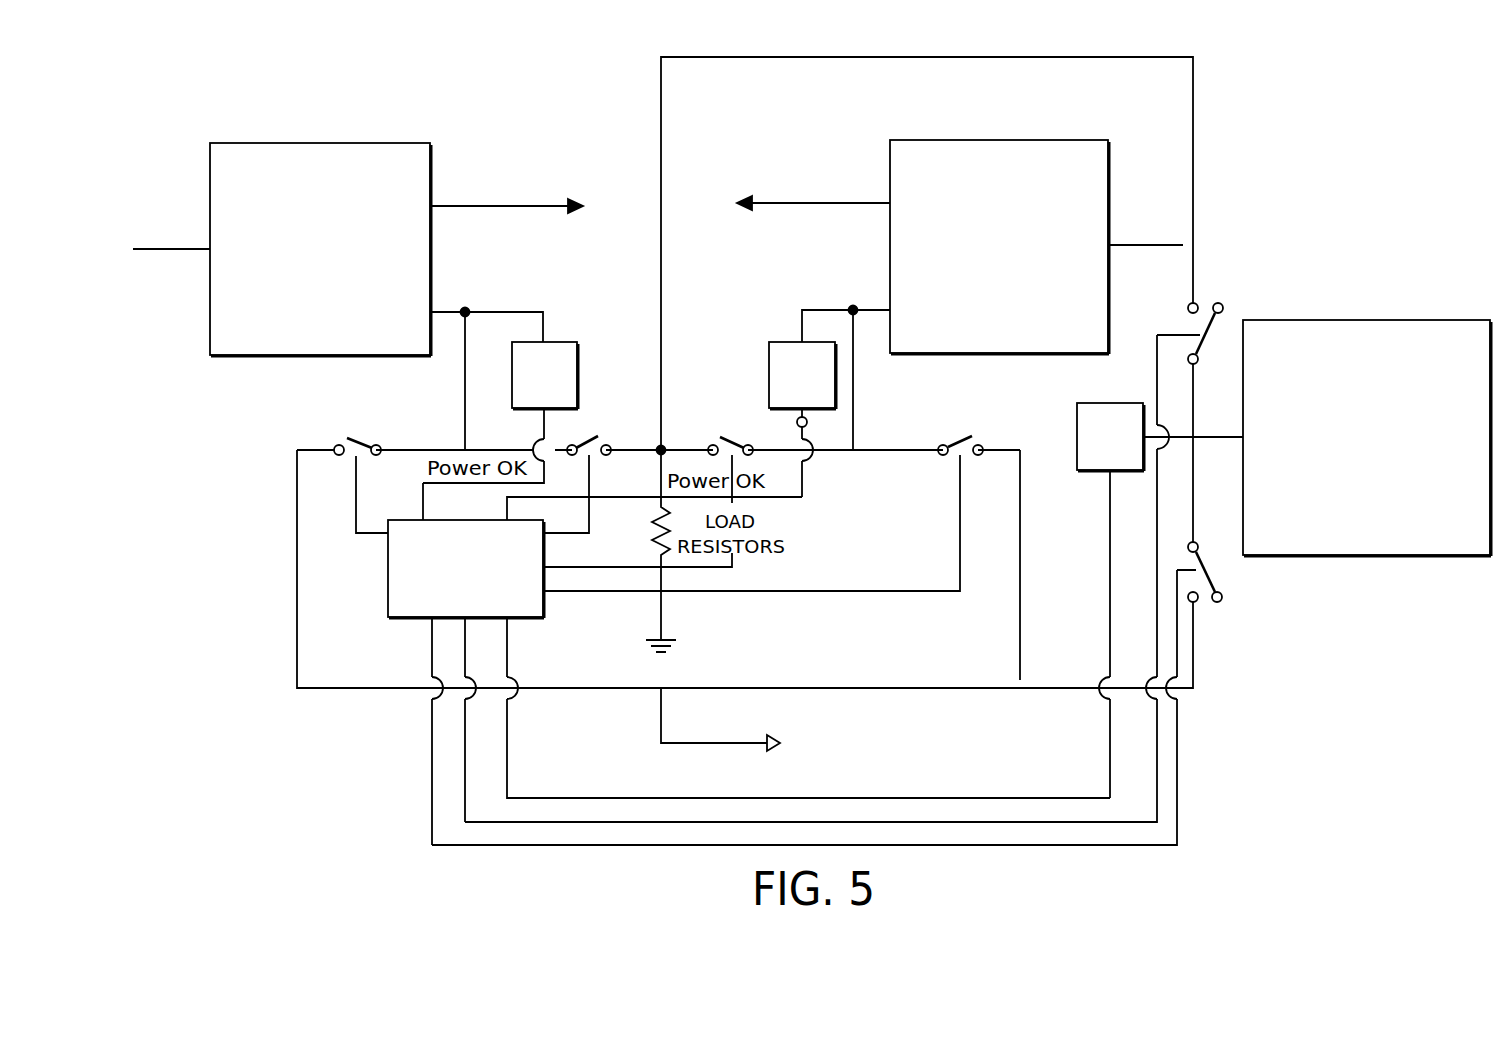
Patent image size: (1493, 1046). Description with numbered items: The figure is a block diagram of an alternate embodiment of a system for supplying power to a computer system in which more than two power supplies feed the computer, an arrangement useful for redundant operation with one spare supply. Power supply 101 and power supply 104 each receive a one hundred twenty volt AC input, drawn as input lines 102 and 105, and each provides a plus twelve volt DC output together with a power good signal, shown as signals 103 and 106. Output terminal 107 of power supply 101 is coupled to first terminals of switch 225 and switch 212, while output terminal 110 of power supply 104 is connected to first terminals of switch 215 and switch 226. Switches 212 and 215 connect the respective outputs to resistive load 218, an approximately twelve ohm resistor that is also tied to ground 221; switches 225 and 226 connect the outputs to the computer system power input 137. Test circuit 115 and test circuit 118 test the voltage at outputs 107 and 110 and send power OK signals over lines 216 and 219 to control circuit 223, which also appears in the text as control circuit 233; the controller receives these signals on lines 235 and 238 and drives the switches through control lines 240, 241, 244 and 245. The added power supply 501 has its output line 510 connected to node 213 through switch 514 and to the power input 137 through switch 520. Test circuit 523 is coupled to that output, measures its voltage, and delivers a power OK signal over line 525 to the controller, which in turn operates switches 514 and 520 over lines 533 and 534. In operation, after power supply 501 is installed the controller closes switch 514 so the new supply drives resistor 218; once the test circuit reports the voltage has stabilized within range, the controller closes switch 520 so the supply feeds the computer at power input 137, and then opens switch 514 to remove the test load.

The power supply 101 is at (314, 143).
The 120VAC input 102 is at (175, 251).
The power good signal 103 is at (500, 208).
The power supply 104 is at (1002, 140).
The 120VAC input 105 is at (1142, 248).
The power good signal 106 is at (830, 210).
The output terminal 107 is at (465, 308).
The output terminal 110 is at (853, 306).
The test circuit 115 is at (580, 363).
The test circuit 118 is at (769, 363).
The computer system power input 137 is at (698, 747).
The switch 212 is at (597, 433).
The node 213 is at (709, 447).
The switch 215 is at (728, 437).
The power OK line 216 is at (544, 422).
The resistive load 218 is at (650, 545).
The power OK line 219 is at (797, 422).
The ground 221 is at (668, 633).
The control circuit 223 is at (483, 588).
The switch 225 is at (352, 457).
The switch 226 is at (968, 457).
The control circuit 233 is at (373, 542).
The power OK input line 235 is at (427, 505).
The power OK input line 238 is at (525, 510).
The switch control line 240 is at (552, 540).
The switch control line 241 is at (628, 572).
The switch control line 244 is at (587, 593).
The control line 245 is at (525, 618).
The power supply 501 is at (1383, 468).
The power supply output line 510 is at (1220, 443).
The switch 514 is at (1220, 328).
The switch 520 is at (1220, 575).
The test circuit 523 is at (1113, 403).
The detector output line 525 is at (1110, 525).
The control line 533 is at (465, 672).
The control line 534 is at (432, 672).